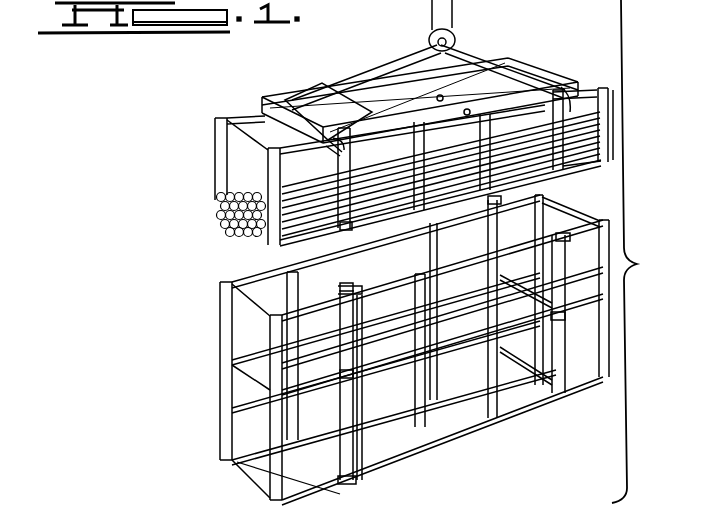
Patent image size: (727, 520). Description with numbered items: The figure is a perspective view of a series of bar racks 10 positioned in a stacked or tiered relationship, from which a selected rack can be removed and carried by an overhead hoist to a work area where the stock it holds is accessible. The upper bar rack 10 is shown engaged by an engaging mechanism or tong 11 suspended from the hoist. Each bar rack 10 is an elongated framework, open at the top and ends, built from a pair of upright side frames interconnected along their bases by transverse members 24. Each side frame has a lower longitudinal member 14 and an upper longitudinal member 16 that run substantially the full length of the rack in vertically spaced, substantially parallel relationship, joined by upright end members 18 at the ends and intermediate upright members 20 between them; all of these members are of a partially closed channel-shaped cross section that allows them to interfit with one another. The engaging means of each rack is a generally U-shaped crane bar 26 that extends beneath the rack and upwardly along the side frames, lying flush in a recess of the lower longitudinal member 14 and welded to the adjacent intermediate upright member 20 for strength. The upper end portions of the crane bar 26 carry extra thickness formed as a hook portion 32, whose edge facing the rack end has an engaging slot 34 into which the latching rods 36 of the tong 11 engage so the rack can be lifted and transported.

The bar rack 10 is at (230, 113).
The engaging mechanism or tong 11 is at (490, 56).
The lower longitudinal member 14 is at (537, 170).
The upper longitudinal member 16 is at (588, 95).
The upright end member 18 is at (218, 144).
The intermediate upright member 20 is at (426, 421).
The transverse member 24 is at (535, 381).
The crane bar 26 is at (346, 478).
The hook portion 32 is at (337, 148).
The engaging slot 34 is at (351, 289).
The latching rod 36 is at (340, 127).